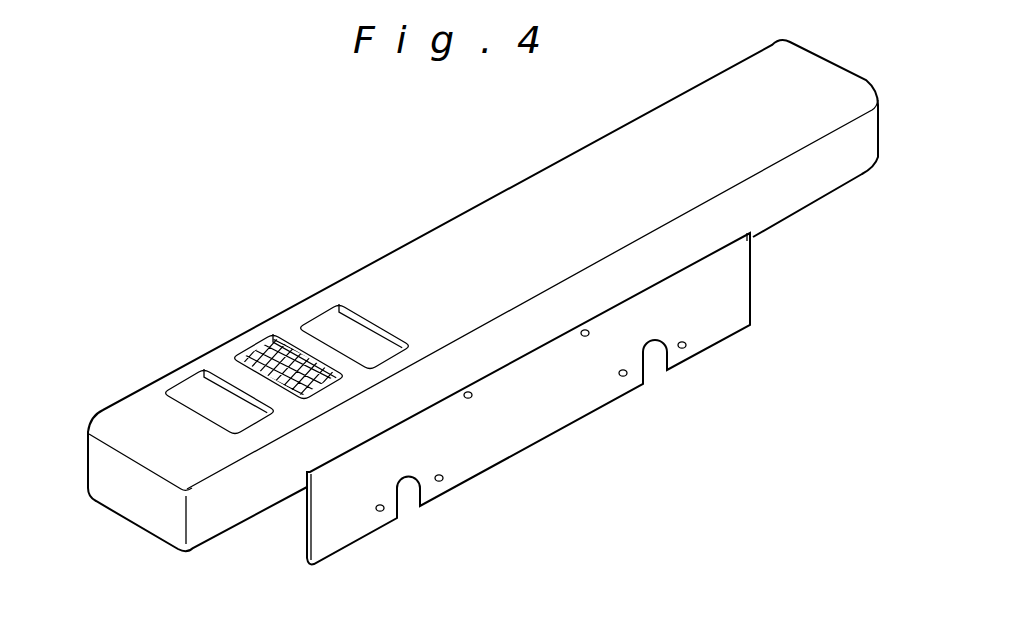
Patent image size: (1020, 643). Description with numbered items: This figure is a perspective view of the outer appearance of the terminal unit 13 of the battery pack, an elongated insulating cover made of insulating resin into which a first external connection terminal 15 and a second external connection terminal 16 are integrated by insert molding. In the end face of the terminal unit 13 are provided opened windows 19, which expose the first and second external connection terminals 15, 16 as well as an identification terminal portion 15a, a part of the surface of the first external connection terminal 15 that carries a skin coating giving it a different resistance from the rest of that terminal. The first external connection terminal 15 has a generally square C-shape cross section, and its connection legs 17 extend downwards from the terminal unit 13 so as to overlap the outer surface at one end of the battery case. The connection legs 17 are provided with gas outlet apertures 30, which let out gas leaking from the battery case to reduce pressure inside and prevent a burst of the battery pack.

The terminal unit 13 is at (488, 248).
The first external connection terminal 15 is at (293, 377).
The identification terminal portion 15a is at (298, 402).
The second external connection terminal 16 is at (216, 405).
The connection legs 17 is at (533, 422).
The opened windows 19 is at (302, 326).
The gas outlet apertures 30 is at (472, 396).